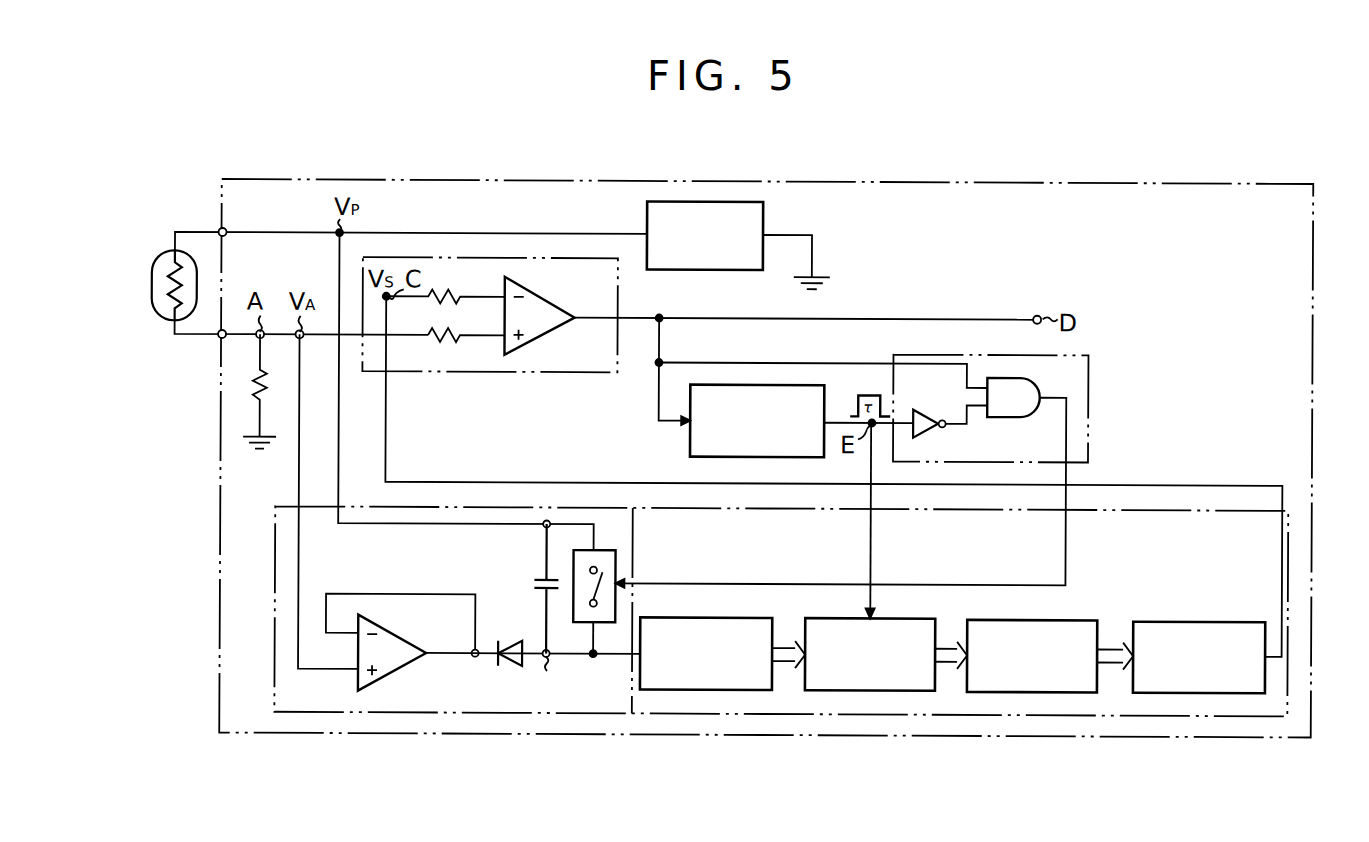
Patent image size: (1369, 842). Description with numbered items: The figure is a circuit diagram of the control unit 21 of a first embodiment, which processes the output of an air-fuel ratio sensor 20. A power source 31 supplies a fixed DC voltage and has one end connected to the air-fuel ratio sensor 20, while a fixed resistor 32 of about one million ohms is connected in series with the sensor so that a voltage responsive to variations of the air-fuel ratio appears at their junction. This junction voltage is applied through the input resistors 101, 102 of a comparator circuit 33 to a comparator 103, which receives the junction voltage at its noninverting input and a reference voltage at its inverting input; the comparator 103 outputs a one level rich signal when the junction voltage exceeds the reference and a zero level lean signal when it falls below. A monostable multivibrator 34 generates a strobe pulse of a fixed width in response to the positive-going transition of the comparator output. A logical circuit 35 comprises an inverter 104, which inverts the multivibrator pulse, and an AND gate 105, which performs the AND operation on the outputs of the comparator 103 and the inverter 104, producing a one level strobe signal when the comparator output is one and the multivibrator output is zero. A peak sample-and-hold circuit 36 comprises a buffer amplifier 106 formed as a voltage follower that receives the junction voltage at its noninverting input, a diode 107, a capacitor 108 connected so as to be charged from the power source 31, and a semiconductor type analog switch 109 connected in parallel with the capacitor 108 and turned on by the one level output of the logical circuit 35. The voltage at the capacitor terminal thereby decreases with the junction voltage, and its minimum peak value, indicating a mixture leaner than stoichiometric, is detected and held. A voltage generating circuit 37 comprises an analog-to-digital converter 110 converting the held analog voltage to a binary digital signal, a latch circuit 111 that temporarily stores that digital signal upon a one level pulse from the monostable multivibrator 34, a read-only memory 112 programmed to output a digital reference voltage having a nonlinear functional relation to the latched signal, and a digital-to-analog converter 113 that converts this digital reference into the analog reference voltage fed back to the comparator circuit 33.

The air-fuel ratio sensor 20 is at (153, 285).
The control unit 21 is at (1184, 192).
The power source 31 is at (762, 213).
The fixed resistor 32 is at (267, 384).
The comparator circuit 33 is at (517, 314).
The monostable multivibrator 34 is at (690, 444).
The logical circuit 35 is at (1022, 409).
The peak sample-and-hold circuit 36 is at (781, 645).
The voltage generating circuit 37 is at (952, 690).
The input resistor 101 is at (436, 297).
The input resistor 102 is at (437, 339).
The comparator 103 is at (556, 312).
The inverter 104 is at (928, 431).
The AND gate 105 is at (1022, 377).
The buffer amplifier 106 is at (404, 642).
The diode 107 is at (502, 643).
The capacitor 108 is at (536, 583).
The semiconductor type analog switch 109 is at (616, 567).
The analog-to-digital converter 110 is at (701, 618).
The latch circuit 111 is at (894, 618).
The read-only memory 112 is at (1036, 620).
The digital-to-analog converter 113 is at (1188, 621).